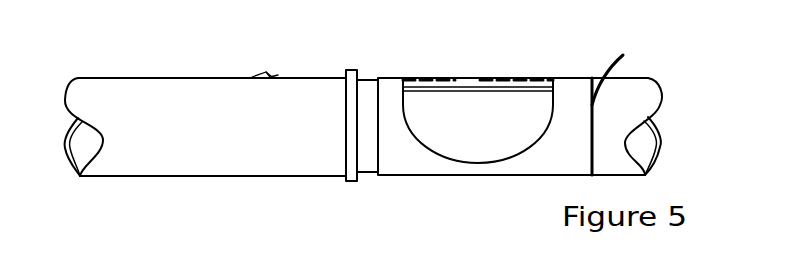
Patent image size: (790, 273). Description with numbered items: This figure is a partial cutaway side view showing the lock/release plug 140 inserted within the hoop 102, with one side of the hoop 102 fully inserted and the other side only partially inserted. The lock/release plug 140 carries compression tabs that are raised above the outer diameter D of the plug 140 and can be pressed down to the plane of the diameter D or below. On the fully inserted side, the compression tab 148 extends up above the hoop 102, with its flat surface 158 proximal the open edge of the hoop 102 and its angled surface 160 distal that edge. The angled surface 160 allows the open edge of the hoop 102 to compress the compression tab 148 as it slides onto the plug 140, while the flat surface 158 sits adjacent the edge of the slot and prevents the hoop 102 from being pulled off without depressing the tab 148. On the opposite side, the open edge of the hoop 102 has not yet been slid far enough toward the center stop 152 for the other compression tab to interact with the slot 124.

The hoop 102 is at (158, 167).
The angled surface 160 is at (268, 76).
The compression tab 148 is at (270, 76).
The flat surface 158 is at (278, 74).
The center stop 152 is at (348, 177).
The lock/release plug 140 is at (368, 92).
The slot 124 is at (472, 80).
The outer diameter D is at (619, 66).